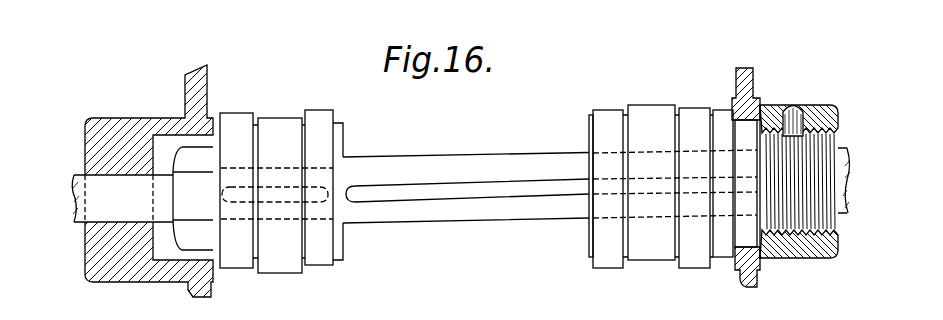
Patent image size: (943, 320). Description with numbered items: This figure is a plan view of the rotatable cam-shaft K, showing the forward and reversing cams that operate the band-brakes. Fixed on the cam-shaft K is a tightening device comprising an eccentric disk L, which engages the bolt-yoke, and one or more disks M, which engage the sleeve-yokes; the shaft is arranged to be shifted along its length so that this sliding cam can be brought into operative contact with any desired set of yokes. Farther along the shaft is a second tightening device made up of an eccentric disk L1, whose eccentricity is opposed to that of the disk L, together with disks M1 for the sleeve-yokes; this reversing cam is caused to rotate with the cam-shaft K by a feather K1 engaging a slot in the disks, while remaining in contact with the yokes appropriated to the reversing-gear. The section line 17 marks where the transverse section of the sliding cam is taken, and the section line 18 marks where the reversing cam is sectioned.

The section line 17 17 is at (248, 100).
The section line 18 18 is at (596, 100).
The eccentric disk L is at (273, 127).
The disks M is at (318, 125).
The cam-shaft K is at (440, 168).
The feather K1 is at (503, 186).
The disks for the sleeve-yokes M1 is at (610, 118).
The eccentric disk L1 is at (652, 122).